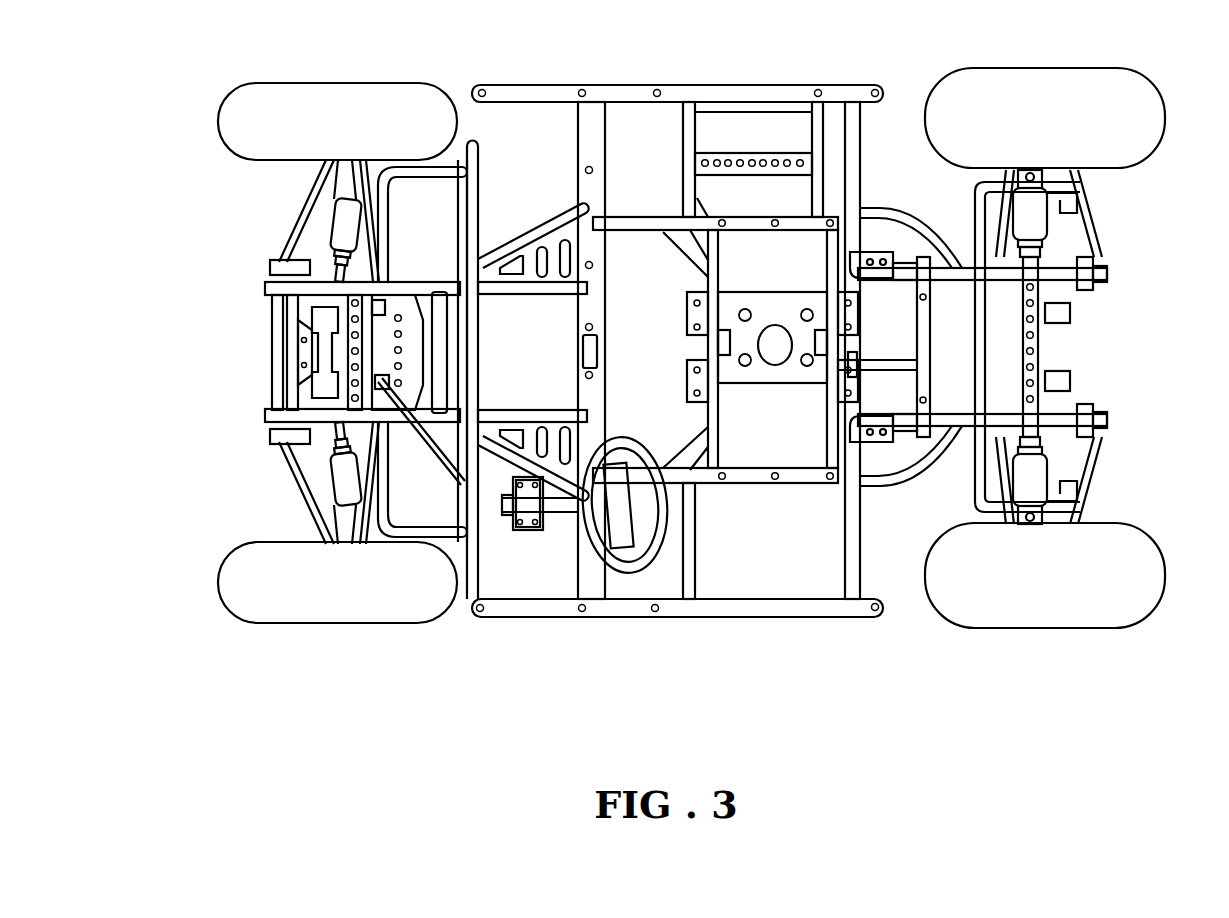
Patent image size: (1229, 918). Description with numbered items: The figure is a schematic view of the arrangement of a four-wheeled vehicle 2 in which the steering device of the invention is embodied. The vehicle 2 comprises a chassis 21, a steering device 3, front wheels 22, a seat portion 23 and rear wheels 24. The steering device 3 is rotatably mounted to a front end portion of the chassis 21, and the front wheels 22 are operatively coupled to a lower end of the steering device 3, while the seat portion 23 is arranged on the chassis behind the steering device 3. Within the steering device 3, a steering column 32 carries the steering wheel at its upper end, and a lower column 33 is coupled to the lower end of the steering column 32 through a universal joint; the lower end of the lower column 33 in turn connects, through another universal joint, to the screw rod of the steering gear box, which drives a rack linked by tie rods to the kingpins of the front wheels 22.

The four-wheeled vehicle 2 is at (191, 130).
The chassis 21 is at (618, 93).
The front wheels 22 is at (233, 597).
The seat portion 23 is at (798, 548).
The rear wheels 24 is at (1145, 105).
The steering device 3 is at (603, 553).
The steering column 32 is at (538, 533).
The lower column 33 is at (417, 440).